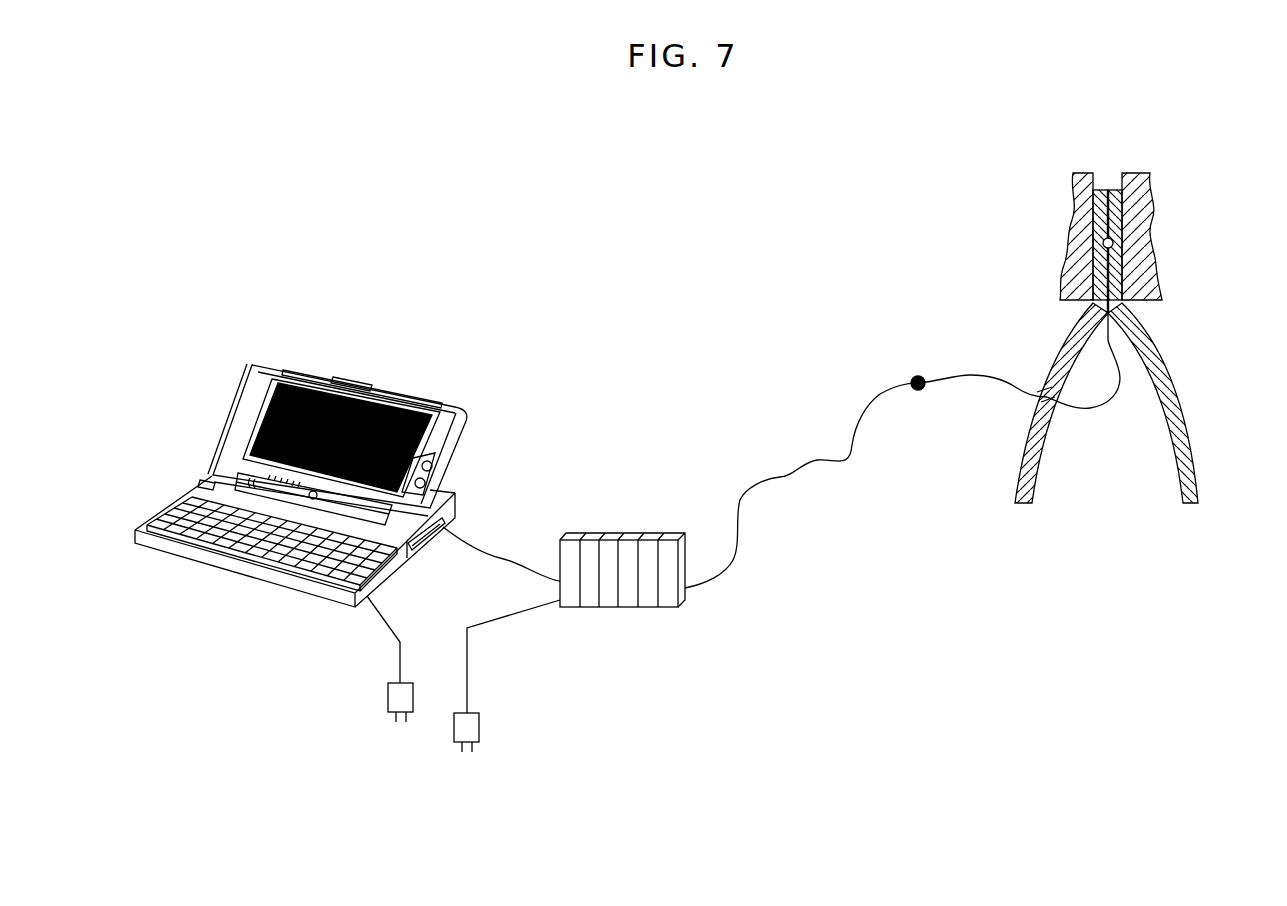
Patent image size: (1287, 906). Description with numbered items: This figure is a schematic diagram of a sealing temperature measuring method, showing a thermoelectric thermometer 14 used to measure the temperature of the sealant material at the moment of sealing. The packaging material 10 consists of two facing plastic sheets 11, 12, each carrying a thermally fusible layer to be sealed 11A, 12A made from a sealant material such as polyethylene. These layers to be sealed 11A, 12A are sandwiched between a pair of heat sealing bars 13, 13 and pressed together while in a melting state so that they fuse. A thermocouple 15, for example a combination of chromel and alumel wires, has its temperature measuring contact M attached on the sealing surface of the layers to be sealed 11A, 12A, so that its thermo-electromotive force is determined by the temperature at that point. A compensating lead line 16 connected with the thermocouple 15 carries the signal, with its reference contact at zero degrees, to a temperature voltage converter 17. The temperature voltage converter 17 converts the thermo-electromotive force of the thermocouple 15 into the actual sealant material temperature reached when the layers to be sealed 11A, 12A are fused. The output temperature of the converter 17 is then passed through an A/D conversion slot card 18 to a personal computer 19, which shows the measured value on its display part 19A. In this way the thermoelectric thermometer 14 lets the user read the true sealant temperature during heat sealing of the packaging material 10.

The packaging material 10 is at (1111, 305).
The plastic sheet 11 is at (1023, 465).
The plastic sheet 12 is at (1192, 462).
The layer to be sealed 11A is at (1100, 190).
The layer to be sealed 12A is at (1117, 190).
The heat sealing bar 13 is at (1077, 243).
The temperature measuring contact M is at (1114, 243).
The thermoelectric thermometer 14 is at (745, 504).
The thermocouple 15 is at (992, 374).
The compensating lead line 16 is at (823, 461).
The temperature voltage converter 17 is at (630, 533).
The A/D conversion slot card 18 is at (458, 517).
The personal computer 19 is at (334, 546).
The display part 19A is at (302, 407).